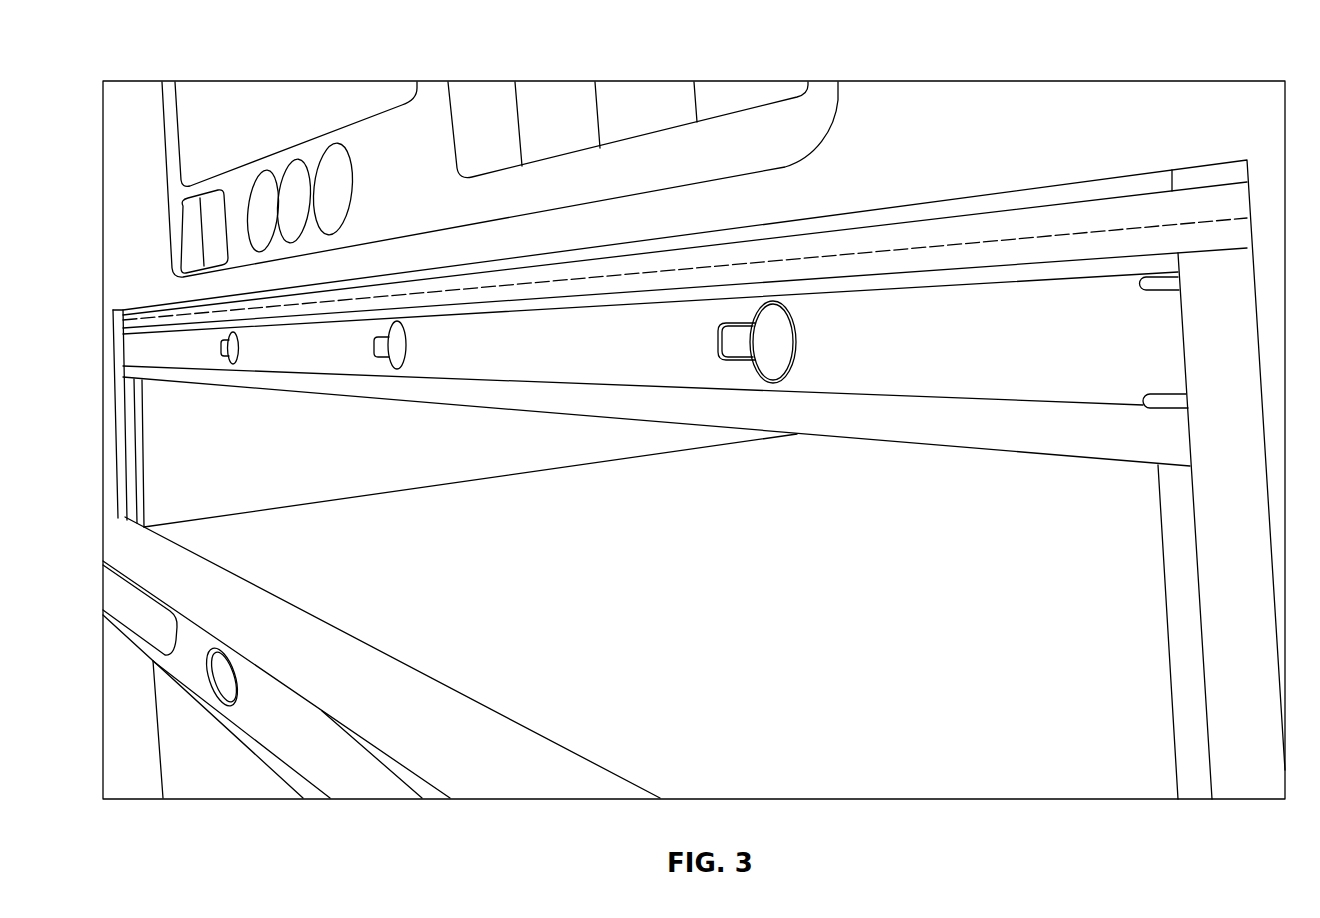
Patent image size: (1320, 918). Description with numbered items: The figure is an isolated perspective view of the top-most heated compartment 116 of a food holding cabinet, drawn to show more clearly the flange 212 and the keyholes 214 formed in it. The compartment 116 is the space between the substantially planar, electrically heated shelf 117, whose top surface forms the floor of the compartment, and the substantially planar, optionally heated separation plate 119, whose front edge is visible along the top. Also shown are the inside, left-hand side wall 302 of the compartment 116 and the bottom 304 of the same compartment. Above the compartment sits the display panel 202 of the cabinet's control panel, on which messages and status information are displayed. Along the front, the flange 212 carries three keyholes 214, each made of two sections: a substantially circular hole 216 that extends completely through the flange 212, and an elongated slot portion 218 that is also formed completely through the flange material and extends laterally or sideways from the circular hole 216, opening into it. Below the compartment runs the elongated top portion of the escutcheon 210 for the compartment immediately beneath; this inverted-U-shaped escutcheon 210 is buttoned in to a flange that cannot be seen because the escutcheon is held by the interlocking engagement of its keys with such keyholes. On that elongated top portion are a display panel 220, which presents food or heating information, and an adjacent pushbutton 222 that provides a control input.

The heated compartment 116 is at (758, 636).
The electrically heated shelf 117 is at (1016, 745).
The separation plate 119 is at (1087, 430).
The display panel 202 is at (301, 108).
The escutcheon 210 is at (337, 662).
The flange 212 is at (147, 347).
The keyhole 214 is at (255, 367).
The circular hole 216 is at (239, 348).
The elongated slot portion 218 is at (225, 355).
The display panel 220 is at (358, 782).
The pushbutton 222 is at (227, 677).
The left-hand side wall 302 is at (218, 455).
The bottom 304 is at (906, 680).